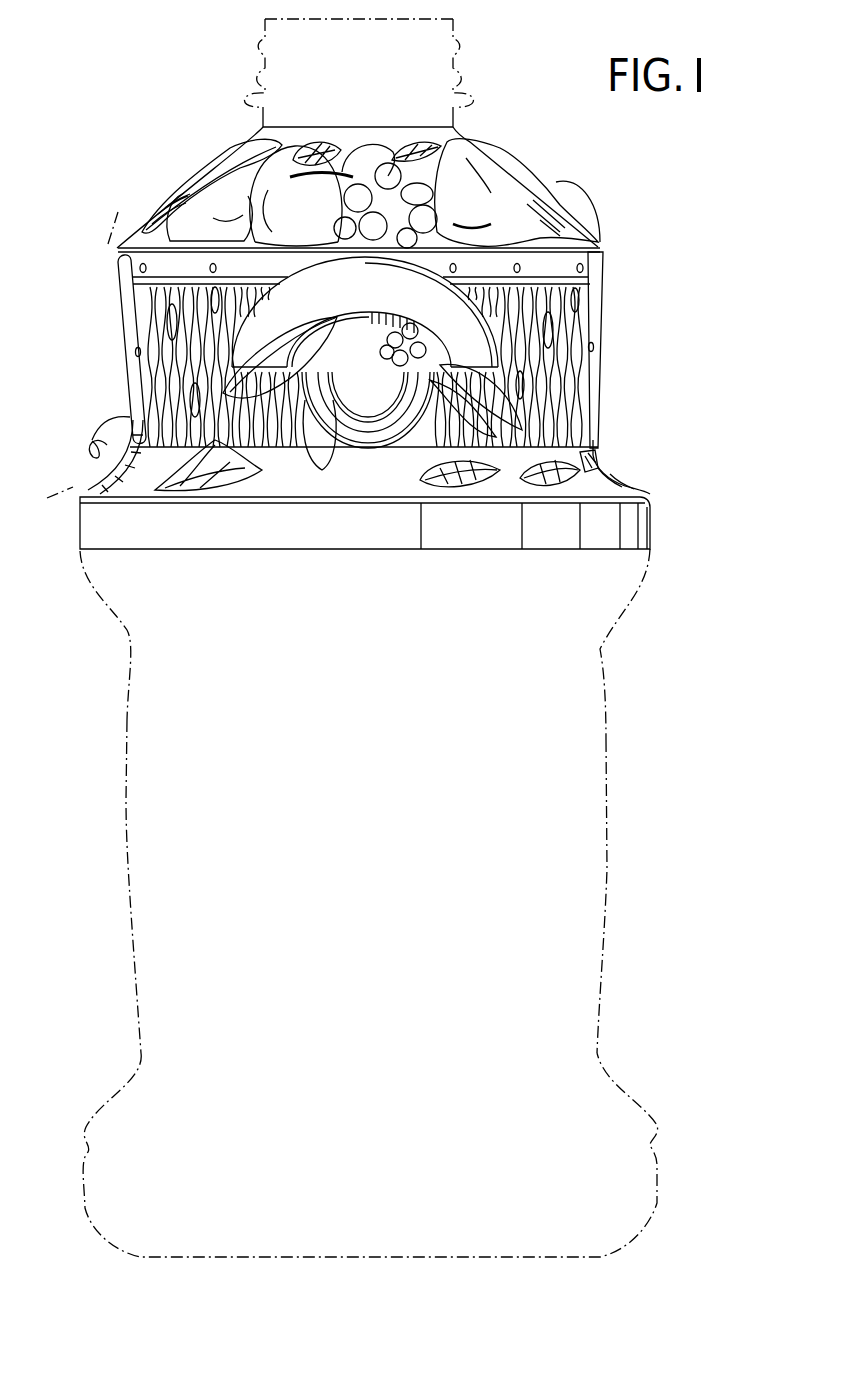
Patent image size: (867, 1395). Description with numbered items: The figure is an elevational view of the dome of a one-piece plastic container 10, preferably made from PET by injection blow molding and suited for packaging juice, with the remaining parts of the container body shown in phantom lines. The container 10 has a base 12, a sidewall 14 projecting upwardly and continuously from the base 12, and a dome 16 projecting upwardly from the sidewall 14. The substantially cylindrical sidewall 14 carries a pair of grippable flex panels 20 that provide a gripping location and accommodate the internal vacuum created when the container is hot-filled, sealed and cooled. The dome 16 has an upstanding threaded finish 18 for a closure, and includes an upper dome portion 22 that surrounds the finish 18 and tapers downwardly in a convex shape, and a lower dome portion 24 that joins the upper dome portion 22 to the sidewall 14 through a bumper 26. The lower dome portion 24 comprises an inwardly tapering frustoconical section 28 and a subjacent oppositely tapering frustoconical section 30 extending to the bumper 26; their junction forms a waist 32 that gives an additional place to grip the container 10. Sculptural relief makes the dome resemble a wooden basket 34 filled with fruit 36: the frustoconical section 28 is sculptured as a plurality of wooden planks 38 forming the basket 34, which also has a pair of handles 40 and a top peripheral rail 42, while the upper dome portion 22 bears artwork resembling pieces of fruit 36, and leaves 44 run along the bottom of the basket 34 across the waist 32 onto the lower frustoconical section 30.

The plastic container 10 is at (119, 109).
The base 12 is at (652, 1222).
The sidewall 14 is at (606, 740).
The dome 16 is at (605, 252).
The threaded finish 18 is at (453, 20).
The flex panels 20 is at (126, 799).
The upper dome portion 22 is at (562, 190).
The lower dome portion 24 is at (595, 367).
The bumper 26 is at (650, 537).
The frustoconical section 28 is at (598, 400).
The frustoconical section 30 is at (620, 488).
The waist 32 is at (598, 452).
The wooden basket 34 is at (600, 325).
The fruit 36 is at (490, 200).
The wooden planks 38 is at (165, 393).
The handles 40 is at (128, 294).
The top peripheral rail 42 is at (598, 252).
The leaves 44 is at (475, 490).